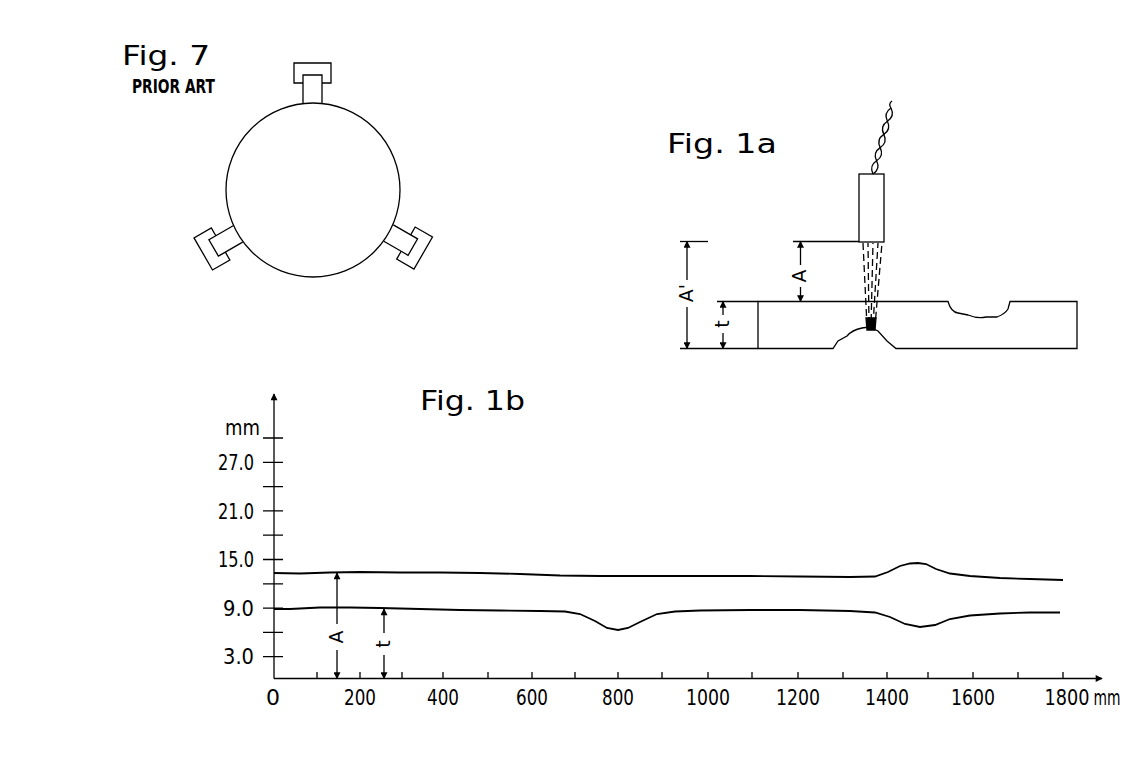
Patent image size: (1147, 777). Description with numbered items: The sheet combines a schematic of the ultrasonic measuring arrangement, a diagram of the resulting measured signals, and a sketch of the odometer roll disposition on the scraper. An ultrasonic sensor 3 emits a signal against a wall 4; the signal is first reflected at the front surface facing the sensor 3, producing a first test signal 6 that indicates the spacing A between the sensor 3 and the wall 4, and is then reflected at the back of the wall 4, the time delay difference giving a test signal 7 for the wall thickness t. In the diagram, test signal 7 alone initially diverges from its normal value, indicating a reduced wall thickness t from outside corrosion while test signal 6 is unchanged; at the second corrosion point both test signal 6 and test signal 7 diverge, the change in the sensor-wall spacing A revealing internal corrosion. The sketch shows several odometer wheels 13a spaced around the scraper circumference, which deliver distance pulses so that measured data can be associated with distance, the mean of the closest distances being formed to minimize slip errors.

In FIG. 7, the odometer wheels 13a is at (331, 73).
In FIG. 1A, the ultrasonic sensor 3 is at (873, 205).
In FIG. 1A, the wall 4 is at (1042, 335).
In FIG. 1B, the first measured or test signal 6 is at (1027, 578).
In FIG. 1B, the measured or test signal for wall thickness 7 is at (1028, 615).